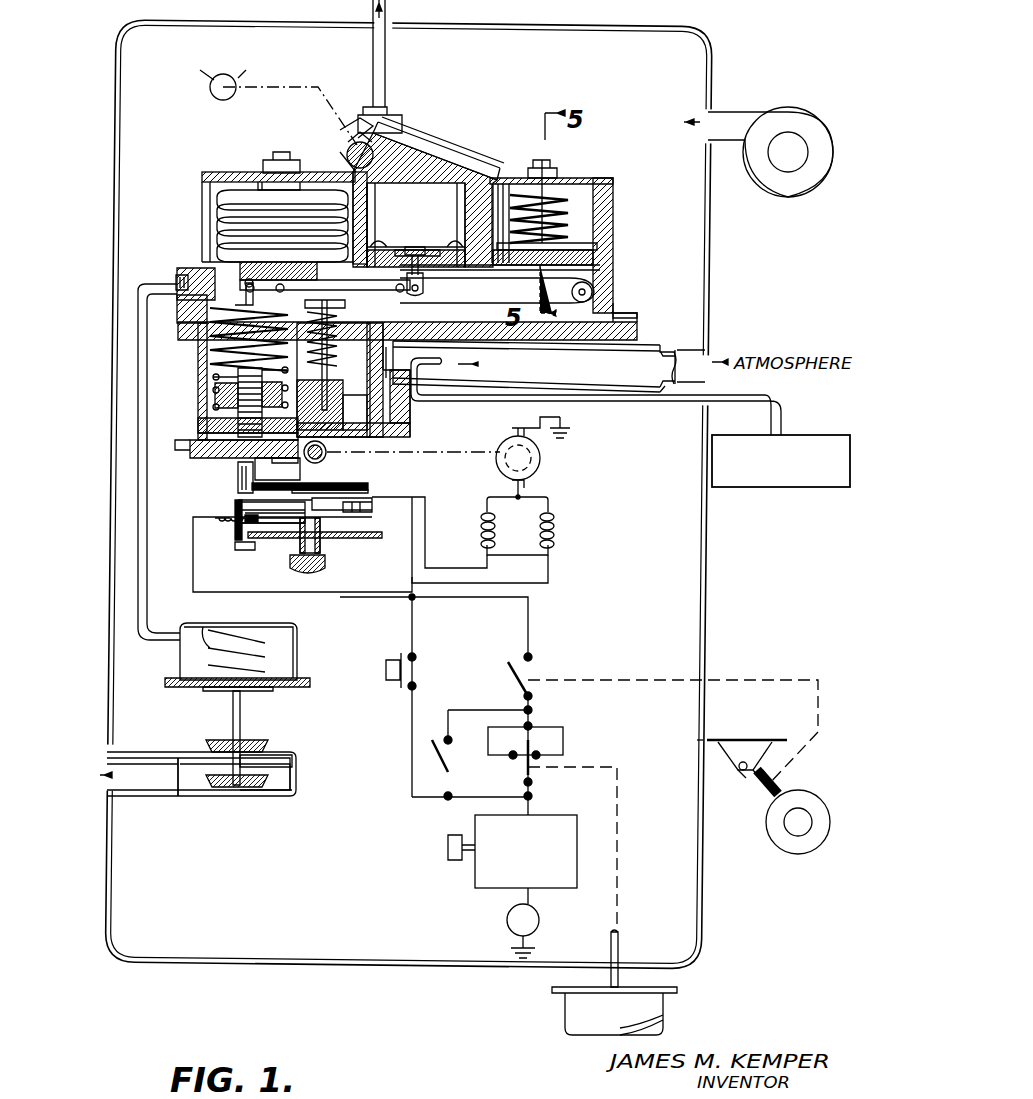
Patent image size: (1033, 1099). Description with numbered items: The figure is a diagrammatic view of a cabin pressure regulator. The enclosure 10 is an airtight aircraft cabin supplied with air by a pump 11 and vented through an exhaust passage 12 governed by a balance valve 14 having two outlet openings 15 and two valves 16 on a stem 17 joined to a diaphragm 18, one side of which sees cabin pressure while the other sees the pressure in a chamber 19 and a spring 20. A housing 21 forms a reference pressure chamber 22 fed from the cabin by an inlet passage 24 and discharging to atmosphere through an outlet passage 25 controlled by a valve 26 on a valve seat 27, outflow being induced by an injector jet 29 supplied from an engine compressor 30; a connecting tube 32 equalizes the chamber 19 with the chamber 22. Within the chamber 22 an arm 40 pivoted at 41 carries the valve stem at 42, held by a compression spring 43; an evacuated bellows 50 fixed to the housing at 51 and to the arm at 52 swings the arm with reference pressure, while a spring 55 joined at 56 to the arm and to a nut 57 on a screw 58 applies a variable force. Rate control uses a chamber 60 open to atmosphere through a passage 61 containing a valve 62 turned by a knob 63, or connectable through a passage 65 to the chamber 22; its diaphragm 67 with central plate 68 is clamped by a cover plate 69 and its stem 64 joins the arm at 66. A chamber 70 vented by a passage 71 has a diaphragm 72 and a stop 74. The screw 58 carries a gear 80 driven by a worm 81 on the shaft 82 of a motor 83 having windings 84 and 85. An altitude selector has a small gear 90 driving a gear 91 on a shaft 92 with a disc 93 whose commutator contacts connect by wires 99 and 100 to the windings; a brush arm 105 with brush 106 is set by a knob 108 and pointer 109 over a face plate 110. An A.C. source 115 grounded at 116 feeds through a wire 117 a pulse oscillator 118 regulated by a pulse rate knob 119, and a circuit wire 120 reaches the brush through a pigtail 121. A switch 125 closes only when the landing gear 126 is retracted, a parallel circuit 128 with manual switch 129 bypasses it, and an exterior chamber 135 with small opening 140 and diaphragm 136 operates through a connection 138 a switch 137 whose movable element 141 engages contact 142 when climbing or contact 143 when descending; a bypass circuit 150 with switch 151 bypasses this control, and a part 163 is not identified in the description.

The enclosure 10 is at (712, 262).
The pump 11 is at (800, 125).
The exhaust passage 12 is at (138, 758).
The balance valve 14 is at (262, 735).
The outlet openings 15 is at (258, 760).
The valves 16 is at (220, 740).
The stem 17 is at (233, 706).
The diaphragm 18 is at (288, 678).
The chamber 19 is at (290, 650).
The spring 20 is at (208, 632).
The housing 21 is at (592, 176).
The chamber 22 is at (200, 278).
The inlet passage 24 is at (205, 262).
The outlet passage 25 is at (384, 437).
The valve 26 is at (350, 380).
The valve seat 27 is at (345, 400).
The injector jet 29 is at (433, 364).
The engine compressor 30 is at (800, 440).
The connecting tube 32 is at (140, 465).
The arm 40 is at (470, 303).
The pivot 41 is at (594, 290).
The connection 42 is at (332, 280).
The compression spring 43 is at (340, 360).
The evacuated bellows 50 is at (222, 206).
The connection 51 is at (262, 172).
The connection 52 is at (310, 280).
The spring 55 is at (200, 340).
The connection 56 is at (244, 296).
The nut 57 is at (237, 400).
The screw 58 is at (197, 434).
The chamber 60 is at (425, 200).
The passage 61 is at (400, 142).
The valve 62 is at (345, 127).
The knob 63 is at (225, 100).
The stem 64 is at (450, 314).
The passage 65 is at (347, 152).
The connection 66 is at (406, 288).
The diaphragm 67 is at (446, 245).
The central plate 68 is at (398, 245).
The cover plate 69 is at (316, 266).
The chamber 70 is at (600, 182).
The passage 71 is at (384, 78).
The diaphragm 72 is at (598, 225).
The stop 74 is at (550, 190).
The gear 80 is at (300, 466).
The worm 81 is at (322, 460).
The shaft 82 is at (412, 462).
The motor 83 is at (500, 440).
The winding 84 is at (495, 530).
The winding 85 is at (552, 512).
The small gear 90 is at (238, 470).
The gear 91 is at (280, 484).
The shaft 92 is at (300, 493).
The disc 93 is at (372, 510).
The wire 99 is at (428, 512).
The wire 100 is at (410, 562).
The brush arm 105 is at (280, 545).
The brush 106 is at (240, 508).
The knob 108 is at (322, 566).
The pointer 109 is at (250, 552).
The face plate 110 is at (348, 540).
The A.C. source of power 115 is at (507, 915).
The ground 116 is at (532, 942).
The wire 117 is at (522, 895).
The pulse oscillator 118 is at (526, 850).
The pulse rate knob 119 is at (448, 852).
The circuit wire 120 is at (190, 575).
The pigtail 121 is at (212, 515).
The switch 125 is at (505, 666).
The landing gear 126 is at (772, 783).
The parallel circuit 128 is at (412, 632).
The manually operable switch 129 is at (390, 682).
The chamber 135 is at (565, 1008).
The diaphragm 136 is at (660, 990).
The switch 137 is at (545, 772).
The connection 138 is at (617, 868).
The small opening 140 is at (645, 1034).
The movable switch element 141 is at (530, 748).
The contact 142 is at (512, 758).
The contact 143 is at (540, 755).
The bypass circuit 150 is at (446, 789).
The manually operable switch 151 is at (447, 778).
The spring 163 is at (240, 545).